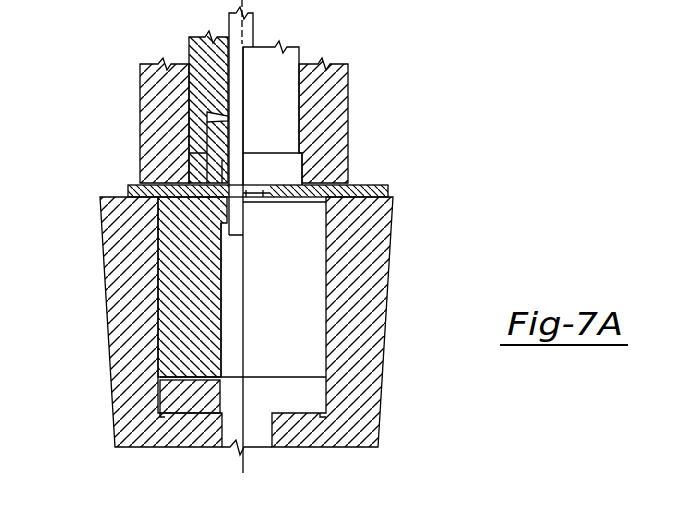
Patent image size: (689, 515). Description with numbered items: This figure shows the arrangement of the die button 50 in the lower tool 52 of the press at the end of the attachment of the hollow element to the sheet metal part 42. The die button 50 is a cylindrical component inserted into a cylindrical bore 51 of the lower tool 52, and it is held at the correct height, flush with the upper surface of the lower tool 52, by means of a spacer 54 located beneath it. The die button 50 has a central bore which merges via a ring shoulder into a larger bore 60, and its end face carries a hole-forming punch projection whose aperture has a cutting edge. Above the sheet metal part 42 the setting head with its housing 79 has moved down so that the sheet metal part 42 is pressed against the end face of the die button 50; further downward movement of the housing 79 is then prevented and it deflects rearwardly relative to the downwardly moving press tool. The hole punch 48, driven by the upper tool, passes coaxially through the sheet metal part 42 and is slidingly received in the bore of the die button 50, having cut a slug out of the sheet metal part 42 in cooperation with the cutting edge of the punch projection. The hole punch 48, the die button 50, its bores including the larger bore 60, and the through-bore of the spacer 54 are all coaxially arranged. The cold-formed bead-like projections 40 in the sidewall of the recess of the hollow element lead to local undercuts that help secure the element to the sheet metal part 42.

The hole punch 48 is at (253, 30).
The bead-like projections 40 is at (299, 53).
The housing 79 is at (140, 92).
The sheet metal part 42 is at (128, 188).
The die button 50 is at (157, 243).
The larger bore 60 is at (221, 288).
The cylindrical bore 51 is at (392, 314).
The lower tool 52 is at (113, 368).
The spacer 54 is at (178, 405).